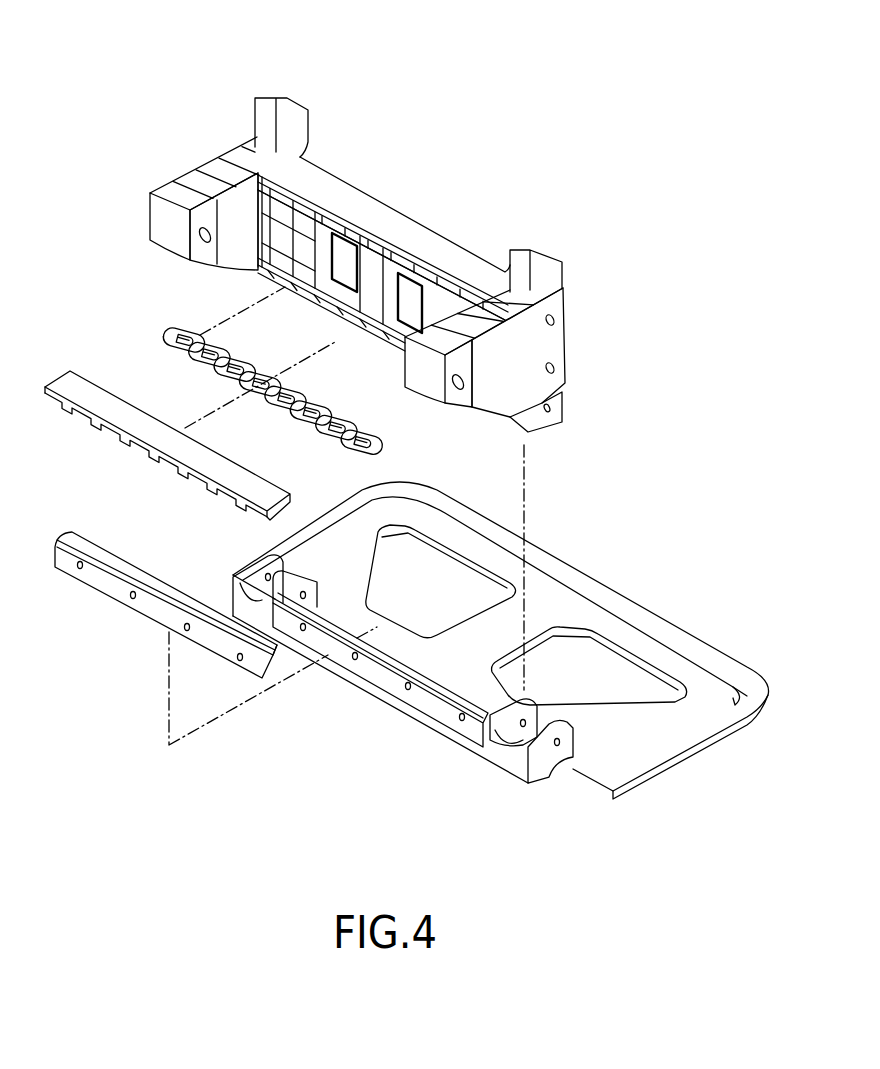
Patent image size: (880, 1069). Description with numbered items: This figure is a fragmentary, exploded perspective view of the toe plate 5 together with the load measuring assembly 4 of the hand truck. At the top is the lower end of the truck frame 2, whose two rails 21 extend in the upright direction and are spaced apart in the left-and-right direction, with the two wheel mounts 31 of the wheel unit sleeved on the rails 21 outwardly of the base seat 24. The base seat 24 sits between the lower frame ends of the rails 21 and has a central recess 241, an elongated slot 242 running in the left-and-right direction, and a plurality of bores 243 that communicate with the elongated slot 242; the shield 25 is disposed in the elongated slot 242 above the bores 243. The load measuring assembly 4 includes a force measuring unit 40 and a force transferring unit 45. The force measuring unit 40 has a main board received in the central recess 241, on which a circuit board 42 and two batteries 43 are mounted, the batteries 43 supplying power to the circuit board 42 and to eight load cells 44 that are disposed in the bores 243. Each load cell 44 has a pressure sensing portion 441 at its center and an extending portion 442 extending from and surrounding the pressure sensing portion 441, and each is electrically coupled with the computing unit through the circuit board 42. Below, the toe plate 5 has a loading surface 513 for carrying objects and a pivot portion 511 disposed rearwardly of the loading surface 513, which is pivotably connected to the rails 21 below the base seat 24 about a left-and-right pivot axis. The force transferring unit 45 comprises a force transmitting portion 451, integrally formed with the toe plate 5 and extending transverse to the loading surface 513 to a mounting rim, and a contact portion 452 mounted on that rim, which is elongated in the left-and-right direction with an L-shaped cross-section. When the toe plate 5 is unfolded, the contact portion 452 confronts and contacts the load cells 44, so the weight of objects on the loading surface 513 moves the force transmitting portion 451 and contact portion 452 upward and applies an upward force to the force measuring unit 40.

The truck frame 2 is at (384, 223).
The rails 21 is at (265, 125).
The wheel mounts 31 is at (230, 203).
The base seat 24 is at (379, 261).
The central recess 241 is at (343, 250).
The elongated slot 242 is at (410, 296).
The bores 243 is at (316, 293).
The batteries 43 is at (333, 224).
The circuit board 42 is at (380, 312).
The load measuring assembly 4 is at (276, 378).
The force measuring unit 40 is at (290, 382).
The load cells 44 is at (275, 376).
The pressure sensing portion 441 is at (184, 332).
The extending portion 442 is at (170, 334).
The shield 25 is at (157, 425).
The force transferring unit 45 is at (166, 621).
The contact portion 452 is at (168, 590).
The toe plate 5 is at (501, 665).
The loading surface 513 is at (678, 673).
The force transmitting portion 451 is at (425, 710).
The pivot portion 511 is at (559, 748).